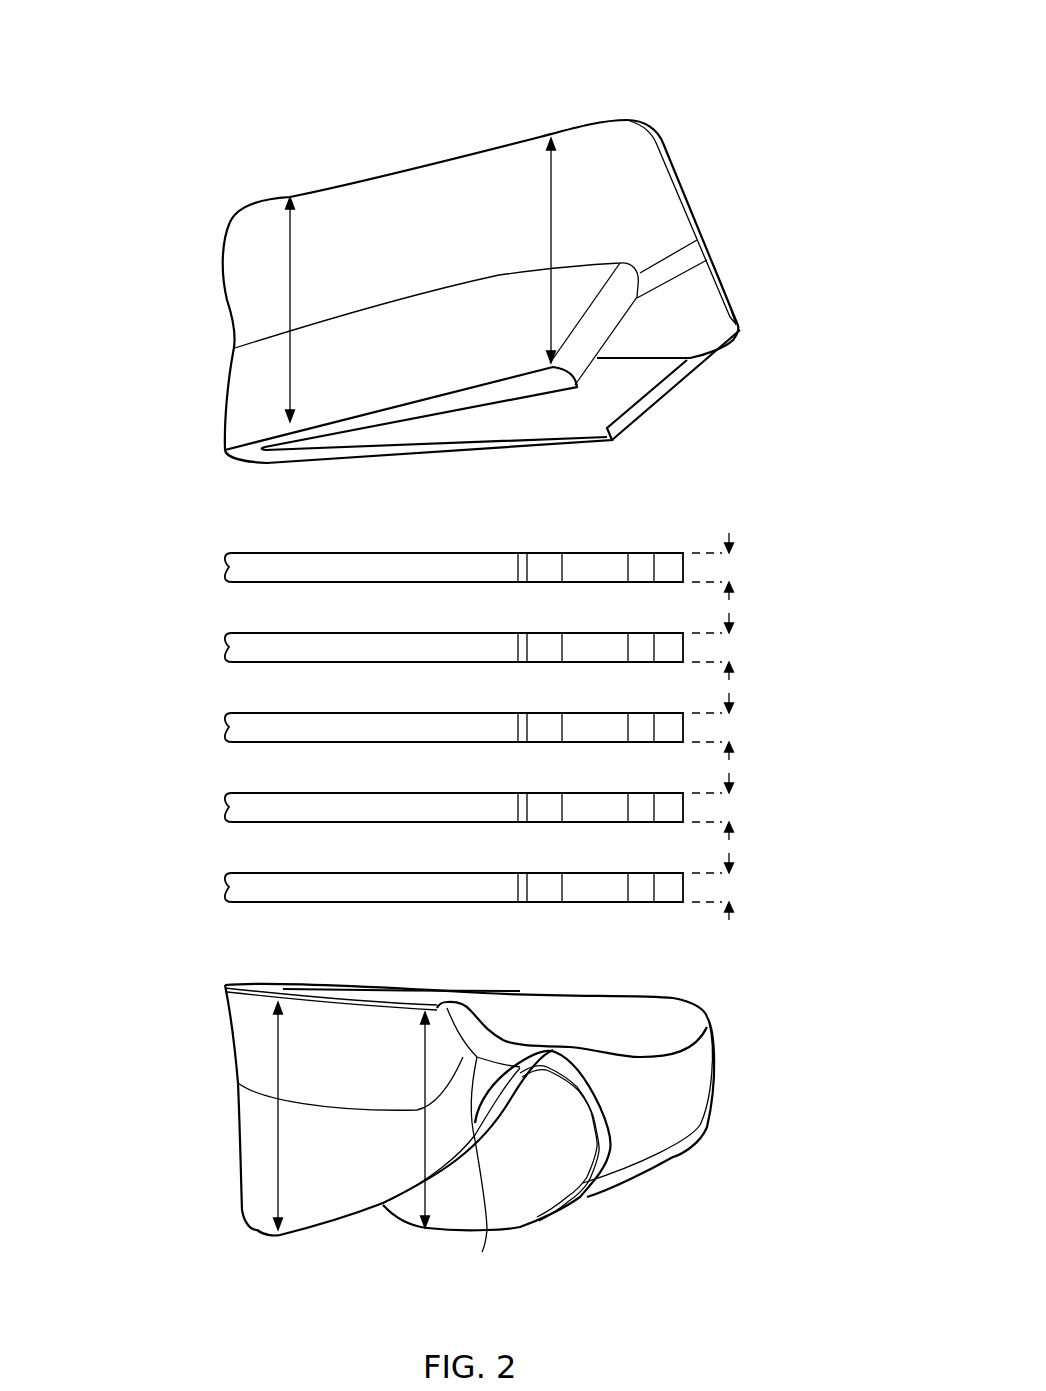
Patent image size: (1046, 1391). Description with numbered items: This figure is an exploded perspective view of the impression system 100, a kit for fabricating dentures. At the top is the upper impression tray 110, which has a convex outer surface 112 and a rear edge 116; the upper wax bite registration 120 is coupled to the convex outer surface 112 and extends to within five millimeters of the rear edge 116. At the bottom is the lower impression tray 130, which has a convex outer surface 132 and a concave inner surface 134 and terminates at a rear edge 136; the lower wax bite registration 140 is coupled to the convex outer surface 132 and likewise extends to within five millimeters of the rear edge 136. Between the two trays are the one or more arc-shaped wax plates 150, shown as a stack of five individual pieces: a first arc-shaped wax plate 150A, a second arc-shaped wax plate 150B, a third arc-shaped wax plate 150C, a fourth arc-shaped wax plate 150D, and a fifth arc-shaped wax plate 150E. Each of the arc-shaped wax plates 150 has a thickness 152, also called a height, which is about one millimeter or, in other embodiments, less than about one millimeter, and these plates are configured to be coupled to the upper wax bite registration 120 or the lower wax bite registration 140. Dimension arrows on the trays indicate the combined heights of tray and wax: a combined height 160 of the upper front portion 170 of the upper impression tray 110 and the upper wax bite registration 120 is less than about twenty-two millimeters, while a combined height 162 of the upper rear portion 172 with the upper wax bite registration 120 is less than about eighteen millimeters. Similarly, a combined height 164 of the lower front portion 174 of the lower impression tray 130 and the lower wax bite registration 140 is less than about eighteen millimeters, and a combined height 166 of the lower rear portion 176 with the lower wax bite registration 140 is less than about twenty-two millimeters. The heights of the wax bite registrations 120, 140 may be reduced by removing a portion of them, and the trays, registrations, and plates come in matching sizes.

The impression system 100 is at (709, 45).
The upper impression tray 110 is at (228, 256).
The convex outer surface 112 is at (655, 172).
The rear edge 116 is at (707, 247).
The upper wax bite registration 120 is at (228, 385).
The lower impression tray 130 is at (240, 1168).
The convex outer surface 132 is at (482, 1252).
The concave inner surface 134 is at (573, 1163).
The rear edge 136 is at (550, 1050).
The lower wax bite registration 140 is at (242, 1045).
The arc-shaped wax plates 150 is at (390, 727).
The first arc-shaped wax plate 150A is at (224, 570).
The second arc-shaped wax plate 150B is at (224, 650).
The third arc-shaped wax plate 150C is at (224, 730).
The fourth arc-shaped wax plate 150D is at (224, 810).
The fifth arc-shaped wax plate 150E is at (224, 890).
The thickness 152 is at (731, 535).
The combined height 160 is at (290, 310).
The combined height 162 is at (553, 153).
The combined height 164 is at (277, 1107).
The combined height 166 is at (425, 1150).
The upper front portion 170 is at (283, 186).
The upper rear portion 172 is at (562, 118).
The lower front portion 174 is at (265, 1245).
The lower rear portion 176 is at (595, 1213).